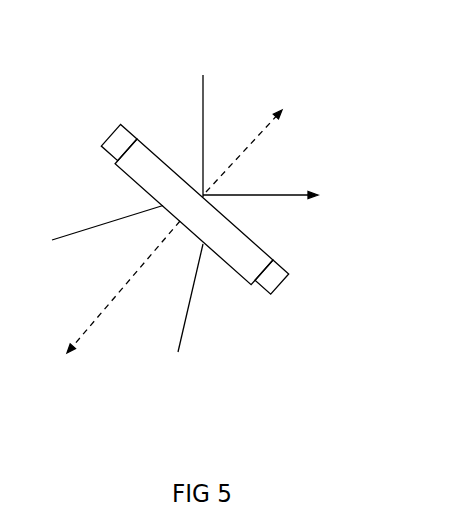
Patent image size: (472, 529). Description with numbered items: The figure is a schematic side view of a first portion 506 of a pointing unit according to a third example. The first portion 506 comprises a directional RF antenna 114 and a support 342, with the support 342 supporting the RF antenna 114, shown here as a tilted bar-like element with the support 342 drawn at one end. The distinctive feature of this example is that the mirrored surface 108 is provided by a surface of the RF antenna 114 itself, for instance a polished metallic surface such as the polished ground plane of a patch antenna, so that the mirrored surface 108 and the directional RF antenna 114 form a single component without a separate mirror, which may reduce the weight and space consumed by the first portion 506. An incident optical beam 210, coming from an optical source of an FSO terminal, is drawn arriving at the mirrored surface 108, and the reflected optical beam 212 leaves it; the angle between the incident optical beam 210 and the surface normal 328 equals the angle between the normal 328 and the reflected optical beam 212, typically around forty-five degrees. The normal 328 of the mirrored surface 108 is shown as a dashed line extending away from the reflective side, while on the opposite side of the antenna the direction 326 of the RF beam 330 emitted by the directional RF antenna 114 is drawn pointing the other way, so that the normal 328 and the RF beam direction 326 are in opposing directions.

The first portion 506 is at (80, 68).
The mirrored surface 108 is at (175, 160).
The directional RF antenna 114 is at (115, 181).
The support 342 is at (282, 283).
The optical beam 210 is at (203, 88).
The reflected optical beam 212 is at (287, 197).
The surface normal 328 is at (265, 128).
The direction of the RF beam 326 is at (122, 290).
The RF beam 330 is at (180, 297).